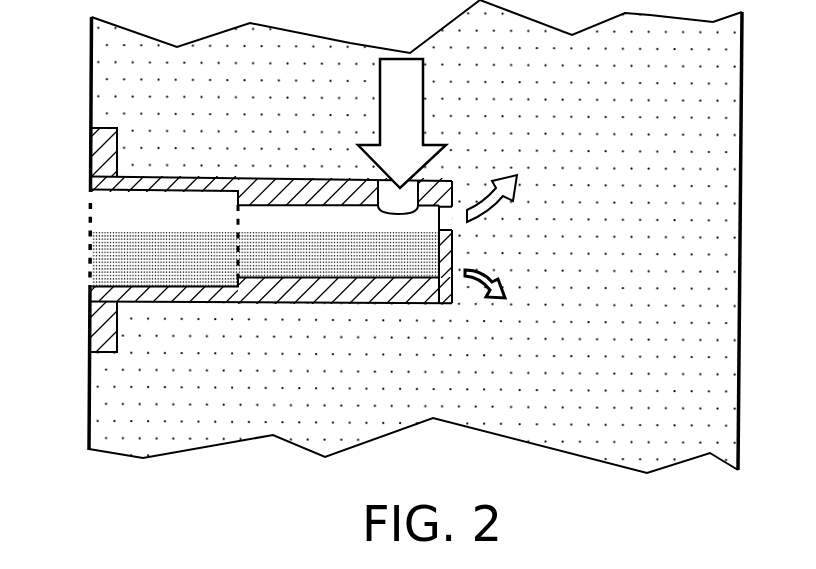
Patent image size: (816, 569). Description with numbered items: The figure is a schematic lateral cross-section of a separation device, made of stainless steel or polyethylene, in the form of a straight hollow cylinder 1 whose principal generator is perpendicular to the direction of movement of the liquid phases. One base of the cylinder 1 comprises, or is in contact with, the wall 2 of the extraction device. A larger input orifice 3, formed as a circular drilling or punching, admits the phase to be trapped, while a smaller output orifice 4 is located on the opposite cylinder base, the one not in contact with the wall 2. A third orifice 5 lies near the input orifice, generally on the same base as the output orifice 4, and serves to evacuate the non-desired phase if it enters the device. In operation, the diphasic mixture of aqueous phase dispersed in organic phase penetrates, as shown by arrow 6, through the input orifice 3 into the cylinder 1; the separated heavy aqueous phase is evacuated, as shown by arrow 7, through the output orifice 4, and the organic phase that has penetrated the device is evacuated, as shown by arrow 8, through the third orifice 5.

The cylinder 1 is at (264, 176).
The wall 2 is at (98, 152).
The input orifice 3 is at (390, 200).
The output orifice 4 is at (450, 277).
The third orifice 5 is at (448, 217).
The arrow 6 is at (411, 94).
The arrow 7 is at (507, 293).
The arrow 8 is at (536, 190).